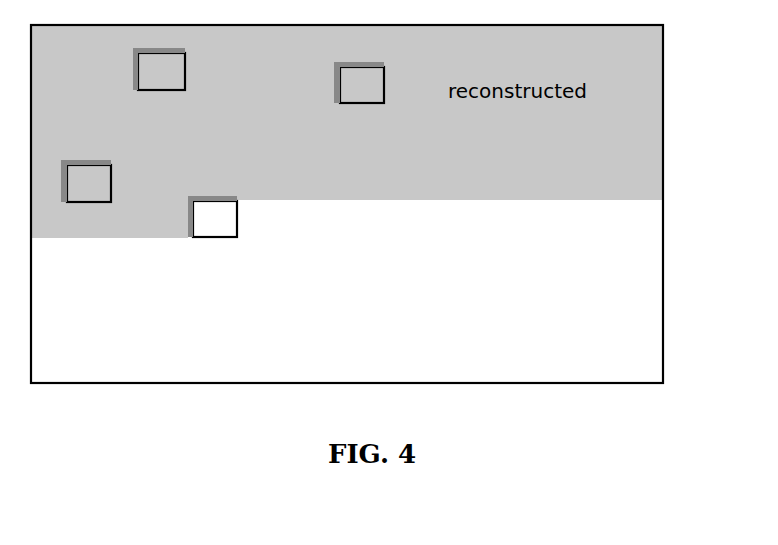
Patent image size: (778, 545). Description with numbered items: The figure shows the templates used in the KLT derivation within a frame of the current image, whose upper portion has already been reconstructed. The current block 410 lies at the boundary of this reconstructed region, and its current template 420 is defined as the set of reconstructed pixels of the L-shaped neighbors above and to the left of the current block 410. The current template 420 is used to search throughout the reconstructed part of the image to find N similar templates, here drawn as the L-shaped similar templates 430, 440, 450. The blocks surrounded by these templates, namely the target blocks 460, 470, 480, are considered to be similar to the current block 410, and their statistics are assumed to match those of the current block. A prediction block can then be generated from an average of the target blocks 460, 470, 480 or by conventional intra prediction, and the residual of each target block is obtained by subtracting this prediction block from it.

The current block 410 is at (218, 231).
The current template 420 is at (190, 237).
The similar template 430 is at (100, 163).
The similar template 440 is at (135, 73).
The similar template 450 is at (338, 83).
The target block 460 is at (103, 190).
The target block 470 is at (170, 80).
The target block 480 is at (363, 95).